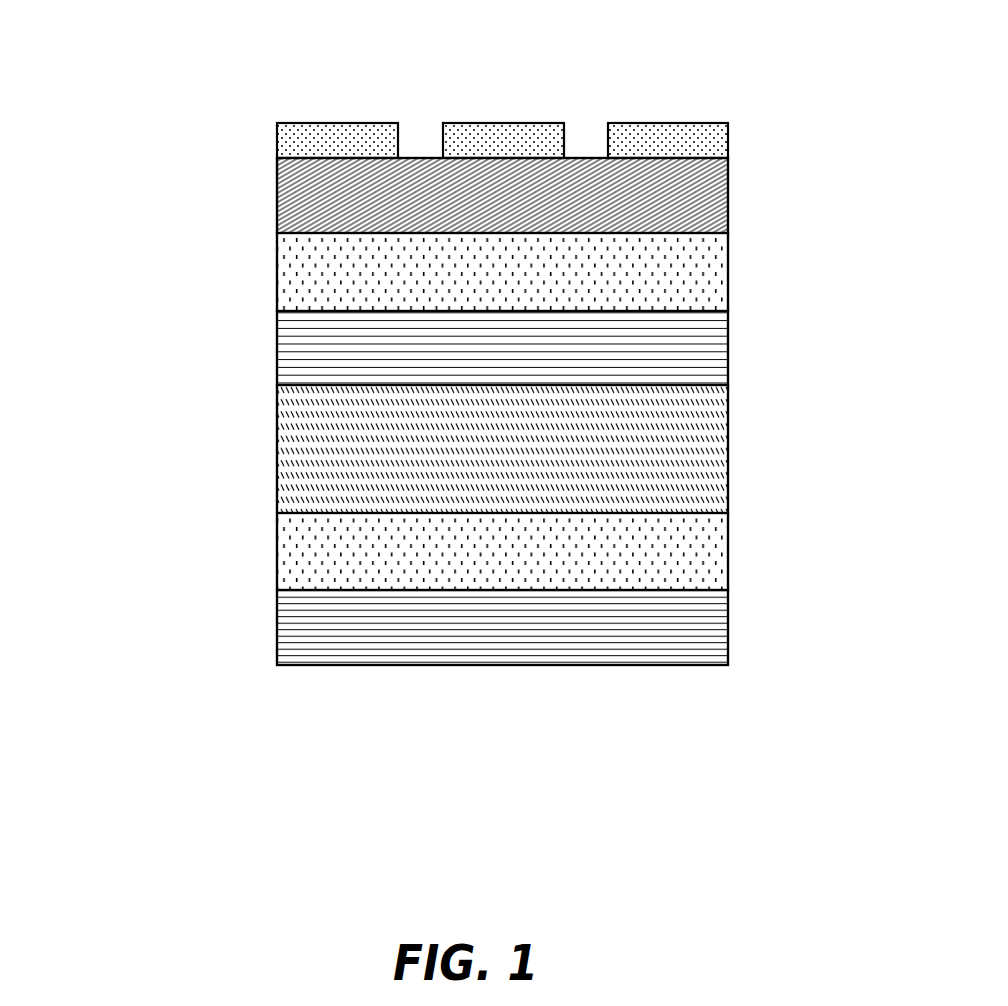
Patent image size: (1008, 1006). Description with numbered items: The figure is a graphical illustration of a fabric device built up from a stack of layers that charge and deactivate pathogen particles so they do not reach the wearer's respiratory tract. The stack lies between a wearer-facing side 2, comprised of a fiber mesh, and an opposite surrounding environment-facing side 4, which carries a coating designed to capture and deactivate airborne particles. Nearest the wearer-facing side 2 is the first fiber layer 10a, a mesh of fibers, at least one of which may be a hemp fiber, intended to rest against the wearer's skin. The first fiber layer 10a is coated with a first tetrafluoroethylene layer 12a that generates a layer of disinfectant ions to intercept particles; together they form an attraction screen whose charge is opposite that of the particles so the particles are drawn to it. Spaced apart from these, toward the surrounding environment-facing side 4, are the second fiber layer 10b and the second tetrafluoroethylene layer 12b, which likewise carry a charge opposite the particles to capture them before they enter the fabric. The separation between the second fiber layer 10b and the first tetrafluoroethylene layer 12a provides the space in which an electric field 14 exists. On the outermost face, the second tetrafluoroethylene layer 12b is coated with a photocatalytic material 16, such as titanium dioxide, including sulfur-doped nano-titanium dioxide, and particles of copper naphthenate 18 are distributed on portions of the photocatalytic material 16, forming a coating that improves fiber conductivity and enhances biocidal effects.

The wearer-facing side 2 is at (240, 673).
The surrounding environment-facing side 4 is at (232, 122).
The first fiber layer 10a is at (728, 632).
The second fiber layer 10b is at (728, 347).
The first tetrafluoroethylene layer 12a is at (278, 550).
The second tetrafluoroethylene layer 12b is at (278, 275).
The electric field 14 is at (728, 447).
The photocatalytic material 16 is at (728, 200).
The copper naphthenate 18 is at (665, 120).